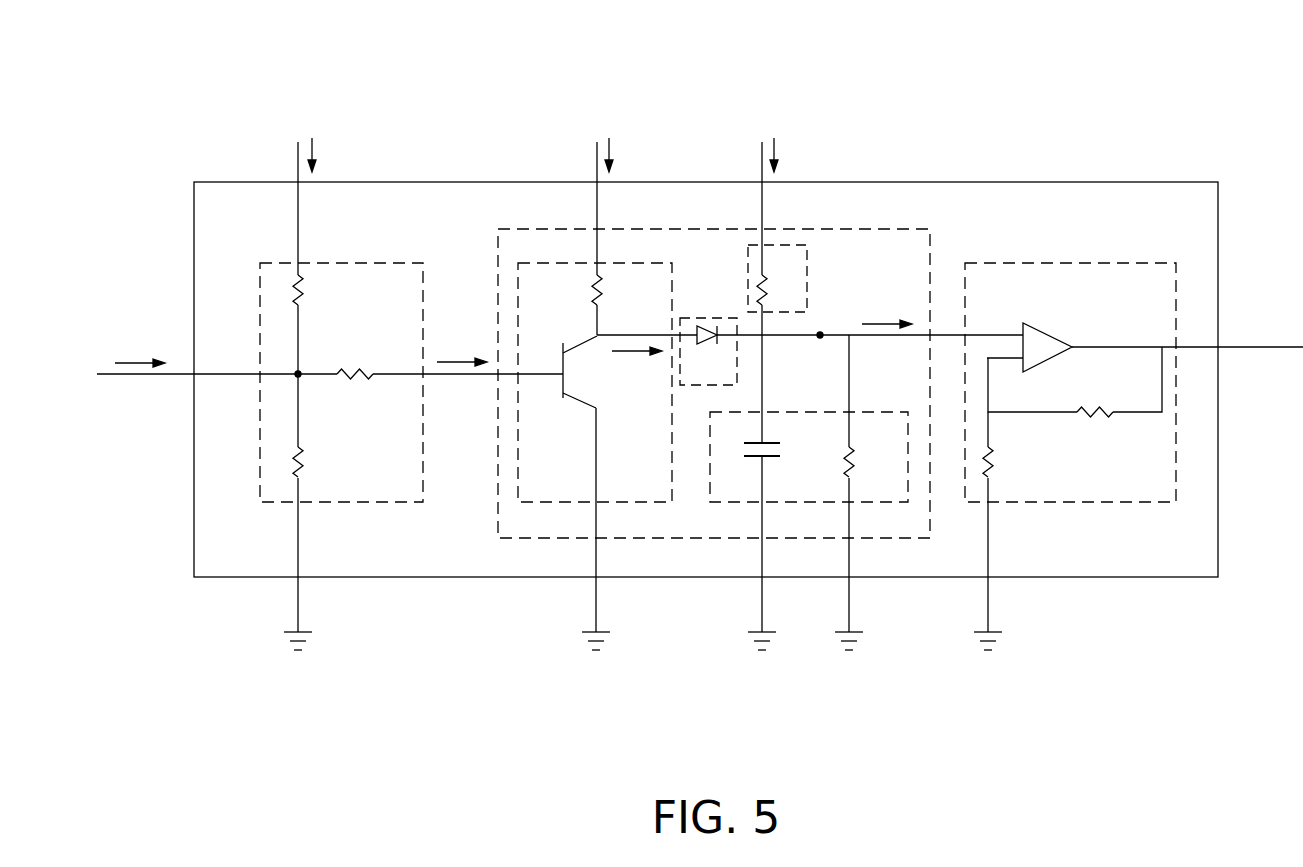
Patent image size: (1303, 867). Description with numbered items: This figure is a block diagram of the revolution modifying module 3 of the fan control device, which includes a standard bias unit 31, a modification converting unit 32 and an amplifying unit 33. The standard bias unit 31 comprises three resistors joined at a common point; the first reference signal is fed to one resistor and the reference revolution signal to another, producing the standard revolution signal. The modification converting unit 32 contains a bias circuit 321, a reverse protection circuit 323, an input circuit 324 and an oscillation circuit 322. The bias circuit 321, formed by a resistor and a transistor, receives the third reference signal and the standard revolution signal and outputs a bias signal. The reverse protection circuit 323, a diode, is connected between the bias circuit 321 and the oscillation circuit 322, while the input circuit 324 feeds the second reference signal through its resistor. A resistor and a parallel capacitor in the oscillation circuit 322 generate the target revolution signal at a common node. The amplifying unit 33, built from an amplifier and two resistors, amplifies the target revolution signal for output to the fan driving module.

The revolution modifying module 3 is at (222, 217).
The standard bias unit 31 is at (268, 470).
The modification converting unit 32 is at (877, 238).
The bias circuit 321 is at (560, 273).
The oscillation circuit 322 is at (727, 494).
The reverse protection circuit 323 is at (708, 318).
The input circuit 324 is at (752, 243).
The amplifying unit 33 is at (1130, 278).